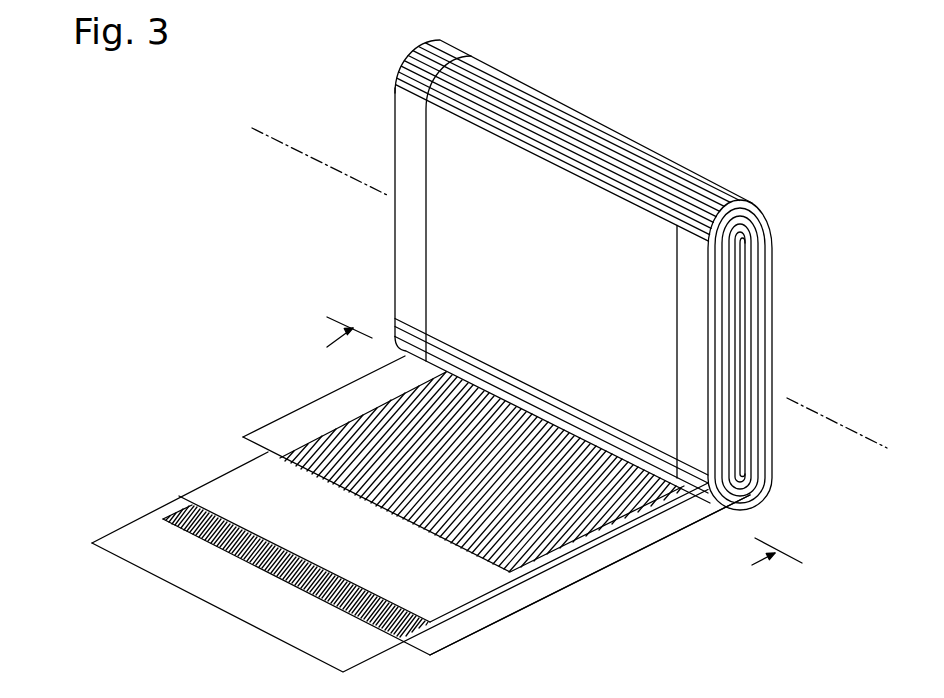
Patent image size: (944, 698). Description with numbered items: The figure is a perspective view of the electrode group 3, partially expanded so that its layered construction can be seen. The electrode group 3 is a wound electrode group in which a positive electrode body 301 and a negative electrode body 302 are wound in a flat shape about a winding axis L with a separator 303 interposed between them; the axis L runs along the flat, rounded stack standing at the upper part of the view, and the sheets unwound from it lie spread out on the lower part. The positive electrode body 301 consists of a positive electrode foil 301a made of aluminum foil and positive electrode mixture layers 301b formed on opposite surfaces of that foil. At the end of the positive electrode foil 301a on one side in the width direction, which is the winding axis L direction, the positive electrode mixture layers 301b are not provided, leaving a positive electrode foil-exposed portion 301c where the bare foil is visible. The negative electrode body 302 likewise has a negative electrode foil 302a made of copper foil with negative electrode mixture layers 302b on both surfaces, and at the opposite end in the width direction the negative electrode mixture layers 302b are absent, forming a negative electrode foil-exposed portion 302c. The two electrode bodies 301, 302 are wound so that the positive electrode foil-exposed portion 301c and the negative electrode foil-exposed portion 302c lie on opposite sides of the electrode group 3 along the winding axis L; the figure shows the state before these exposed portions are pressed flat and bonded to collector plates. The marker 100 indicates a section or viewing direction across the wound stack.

The electrode group 3 is at (566, 150).
The positive electrode body 301 is at (283, 587).
The positive electrode foil 301a is at (522, 597).
The positive electrode mixture layers 301b is at (165, 513).
The positive electrode foil-exposed portion 301c is at (695, 317).
The negative electrode body 302 is at (630, 502).
The negative electrode foil 302a is at (343, 390).
The negative electrode mixture layers 302b is at (547, 542).
The negative electrode foil-exposed portion 302c is at (405, 253).
The separator 303 is at (225, 472).
The section line / viewing direction 100 is at (565, 454).
The winding axis L is at (307, 157).